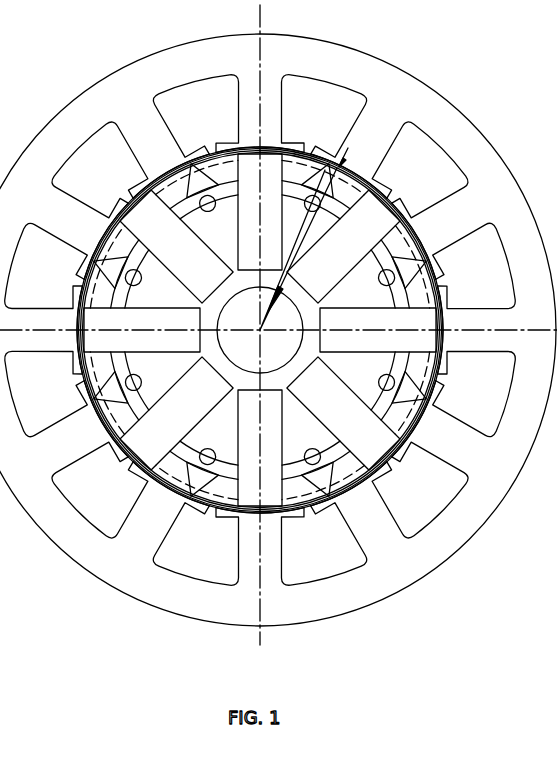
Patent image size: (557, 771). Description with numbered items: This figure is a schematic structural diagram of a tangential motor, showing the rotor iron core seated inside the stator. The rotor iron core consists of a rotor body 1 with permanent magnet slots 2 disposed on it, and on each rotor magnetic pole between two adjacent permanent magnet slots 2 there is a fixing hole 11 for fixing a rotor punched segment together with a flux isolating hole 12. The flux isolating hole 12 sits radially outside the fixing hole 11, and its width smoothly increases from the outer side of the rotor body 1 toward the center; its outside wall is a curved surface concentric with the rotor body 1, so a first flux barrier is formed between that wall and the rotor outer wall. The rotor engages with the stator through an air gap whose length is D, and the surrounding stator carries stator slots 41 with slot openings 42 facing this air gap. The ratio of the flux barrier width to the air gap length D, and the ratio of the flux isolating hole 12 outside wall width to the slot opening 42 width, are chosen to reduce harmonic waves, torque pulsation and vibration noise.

The rotor body 1 is at (117, 235).
The permanent magnet slots 2 is at (137, 212).
The fixing hole 11 is at (98, 393).
The flux isolating hole 12 is at (132, 384).
The stator slots 41 is at (442, 192).
The slot openings 42 is at (393, 197).
The length of the air gap D is at (348, 148).